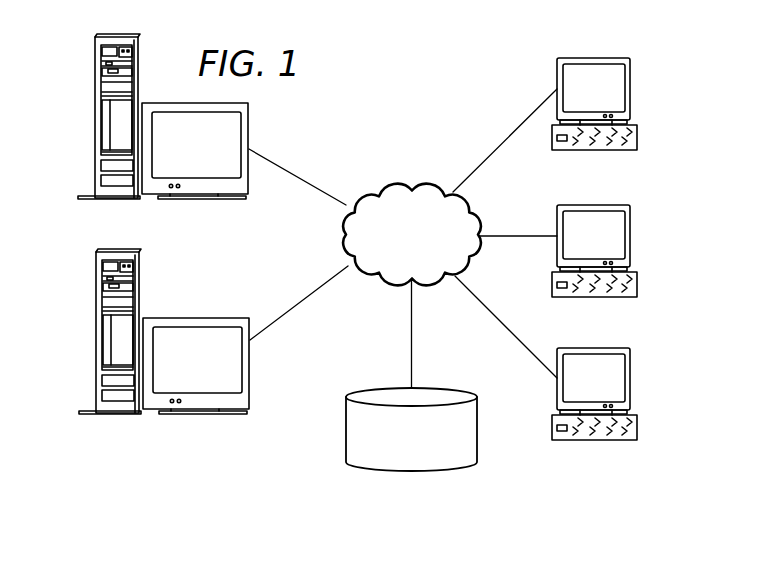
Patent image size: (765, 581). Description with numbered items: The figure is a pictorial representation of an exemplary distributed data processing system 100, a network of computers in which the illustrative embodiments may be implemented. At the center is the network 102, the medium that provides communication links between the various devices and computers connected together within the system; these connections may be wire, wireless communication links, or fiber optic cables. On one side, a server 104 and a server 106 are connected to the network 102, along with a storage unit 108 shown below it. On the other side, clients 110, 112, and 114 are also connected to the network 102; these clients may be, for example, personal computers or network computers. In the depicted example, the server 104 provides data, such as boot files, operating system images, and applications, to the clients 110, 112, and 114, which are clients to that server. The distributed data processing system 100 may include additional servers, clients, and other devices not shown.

The distributed data processing system 100 is at (468, 66).
The network 102 is at (382, 186).
The server 104 is at (95, 122).
The server 106 is at (97, 337).
The storage unit 108 is at (394, 471).
The client 110 is at (632, 87).
The client 112 is at (632, 236).
The client 114 is at (632, 380).